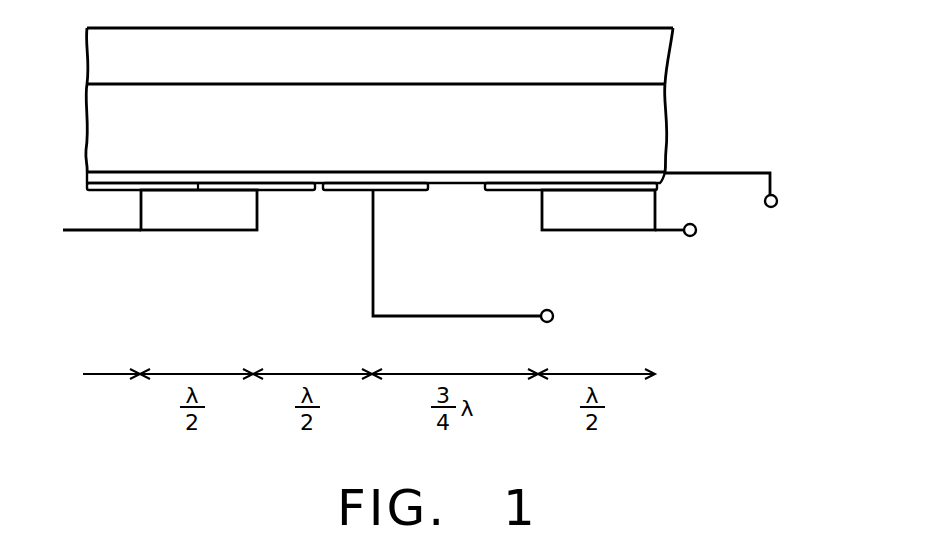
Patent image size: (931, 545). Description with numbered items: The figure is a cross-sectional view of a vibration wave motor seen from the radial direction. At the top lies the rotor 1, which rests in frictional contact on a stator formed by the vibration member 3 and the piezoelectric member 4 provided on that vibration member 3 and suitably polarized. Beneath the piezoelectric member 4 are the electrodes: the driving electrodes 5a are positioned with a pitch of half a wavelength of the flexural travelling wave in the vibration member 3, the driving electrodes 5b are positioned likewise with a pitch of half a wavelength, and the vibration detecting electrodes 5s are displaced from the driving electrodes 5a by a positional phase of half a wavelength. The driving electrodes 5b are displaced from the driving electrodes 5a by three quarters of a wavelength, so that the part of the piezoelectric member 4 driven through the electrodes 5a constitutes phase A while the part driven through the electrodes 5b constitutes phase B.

The rotor 1 is at (650, 67).
The vibration member 3 is at (650, 137).
The piezoelectric member 4 is at (356, 172).
The driving electrodes 5a is at (284, 191).
The vibration detecting electrodes 5s is at (407, 193).
The driving electrodes 5b is at (587, 230).